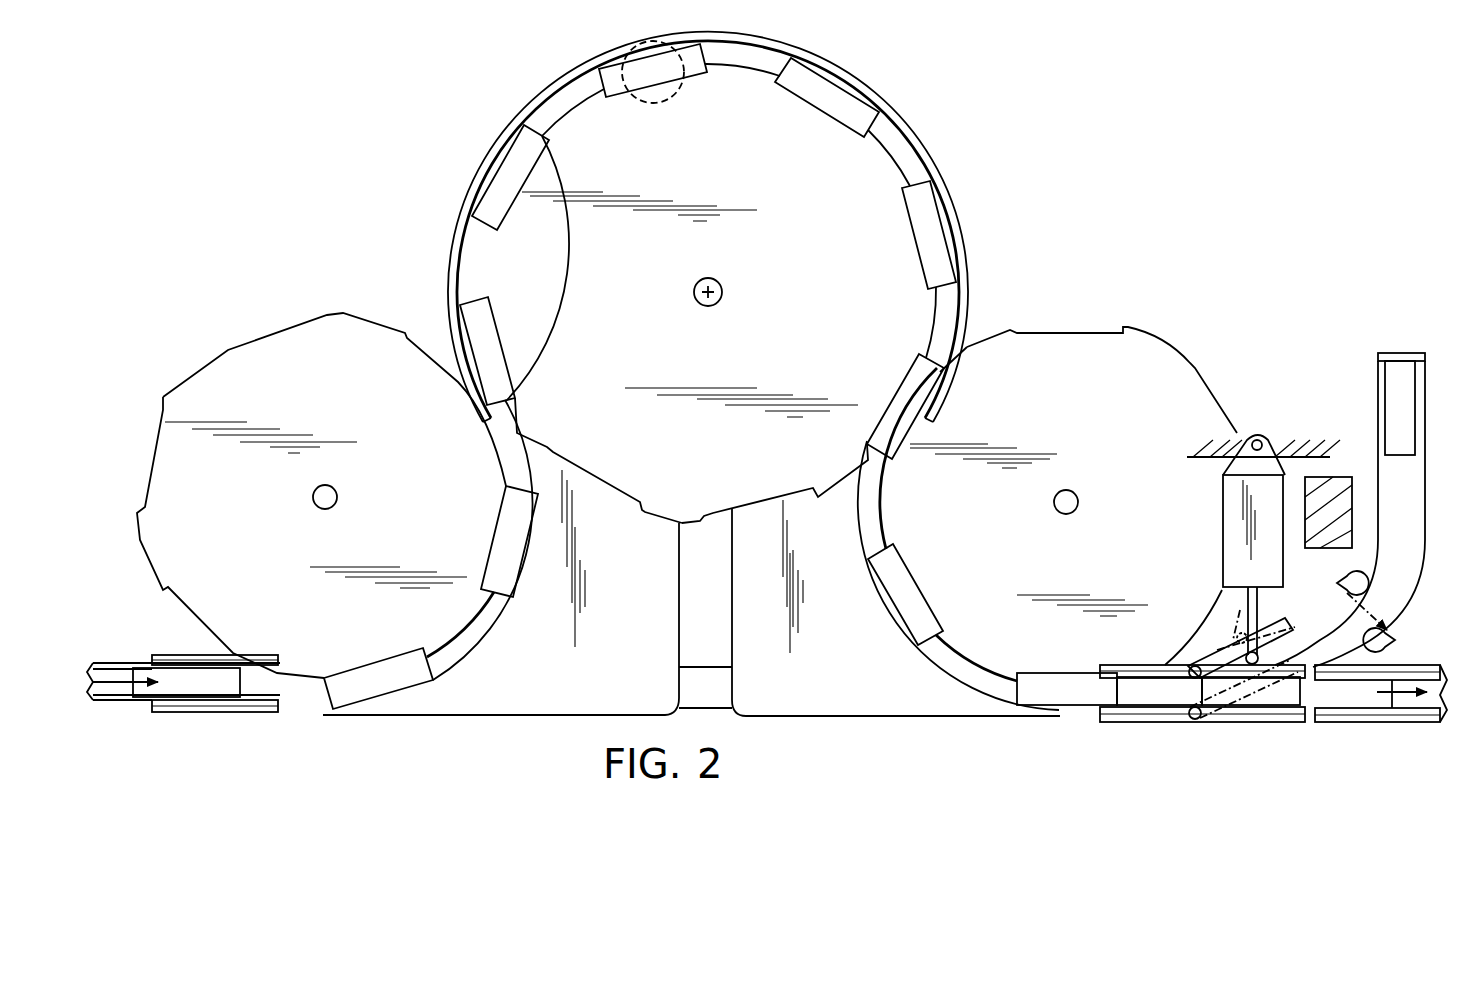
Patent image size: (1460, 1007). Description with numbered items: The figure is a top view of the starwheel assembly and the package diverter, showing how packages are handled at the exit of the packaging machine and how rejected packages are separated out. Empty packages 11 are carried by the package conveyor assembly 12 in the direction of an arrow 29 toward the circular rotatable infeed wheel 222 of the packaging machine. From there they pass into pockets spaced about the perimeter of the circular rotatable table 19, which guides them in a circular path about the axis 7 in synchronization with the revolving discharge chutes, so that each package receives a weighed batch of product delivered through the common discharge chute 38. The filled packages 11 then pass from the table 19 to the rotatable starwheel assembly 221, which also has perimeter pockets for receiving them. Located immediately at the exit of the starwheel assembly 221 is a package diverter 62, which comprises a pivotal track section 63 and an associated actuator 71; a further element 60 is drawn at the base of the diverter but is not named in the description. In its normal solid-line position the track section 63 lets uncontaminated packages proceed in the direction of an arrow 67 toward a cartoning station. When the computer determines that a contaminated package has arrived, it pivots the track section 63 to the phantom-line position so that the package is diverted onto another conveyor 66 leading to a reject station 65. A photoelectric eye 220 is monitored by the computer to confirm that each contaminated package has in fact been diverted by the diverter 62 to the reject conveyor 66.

The axis 7 is at (693, 290).
The packages 11 is at (498, 193).
The package conveyor assembly 12 is at (127, 707).
The rotatable table 19 is at (888, 140).
The arrow 29 is at (108, 678).
The discharge chute 38 is at (668, 80).
The transfer box 60 is at (1130, 722).
The package diverter 62 is at (1222, 655).
The pivotal track section 63 is at (1241, 724).
The reject station 65 is at (1415, 387).
The conveyor 66 is at (1378, 392).
The arrow 67 is at (1398, 692).
The actuator 71 is at (1233, 562).
The photoelectric eye 220 is at (1318, 594).
The starwheel assembly 221 is at (1048, 340).
The infeed wheel 222 is at (275, 362).